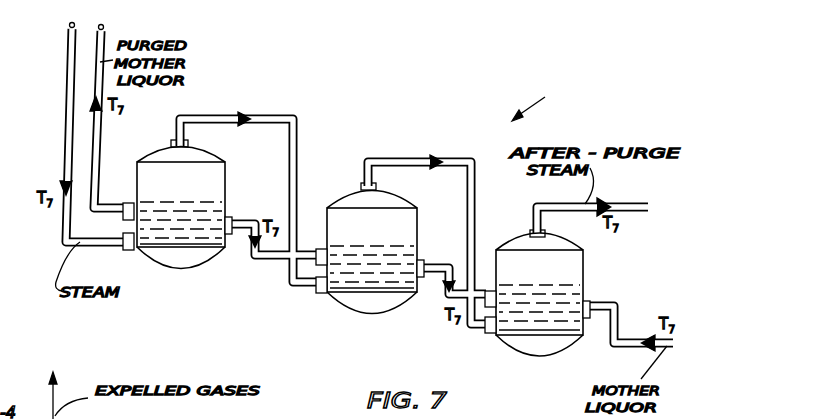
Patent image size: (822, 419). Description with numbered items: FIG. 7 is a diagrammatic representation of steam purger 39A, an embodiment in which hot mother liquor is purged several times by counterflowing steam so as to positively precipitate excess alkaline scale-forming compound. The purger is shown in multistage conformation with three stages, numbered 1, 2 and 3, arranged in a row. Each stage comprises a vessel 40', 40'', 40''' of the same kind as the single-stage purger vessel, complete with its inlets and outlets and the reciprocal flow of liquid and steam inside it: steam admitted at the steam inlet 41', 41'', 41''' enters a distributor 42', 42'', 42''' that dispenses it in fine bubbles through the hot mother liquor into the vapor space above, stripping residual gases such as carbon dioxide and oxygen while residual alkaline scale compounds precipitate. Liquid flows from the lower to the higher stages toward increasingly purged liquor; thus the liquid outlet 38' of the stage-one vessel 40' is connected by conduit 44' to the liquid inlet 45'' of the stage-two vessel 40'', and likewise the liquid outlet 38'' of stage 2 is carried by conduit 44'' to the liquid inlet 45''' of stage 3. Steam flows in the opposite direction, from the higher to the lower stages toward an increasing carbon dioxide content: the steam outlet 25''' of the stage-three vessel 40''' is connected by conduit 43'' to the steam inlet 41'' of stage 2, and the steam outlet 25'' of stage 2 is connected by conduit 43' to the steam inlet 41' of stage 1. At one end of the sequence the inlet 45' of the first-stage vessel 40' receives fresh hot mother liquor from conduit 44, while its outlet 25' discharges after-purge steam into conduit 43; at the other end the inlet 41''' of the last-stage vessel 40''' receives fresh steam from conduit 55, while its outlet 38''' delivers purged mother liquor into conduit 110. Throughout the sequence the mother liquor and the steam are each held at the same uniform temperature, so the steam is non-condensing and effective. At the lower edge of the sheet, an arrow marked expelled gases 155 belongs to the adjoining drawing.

The conduit 55 is at (65, 146).
The conduit 110 is at (99, 133).
The stage 3 is at (176, 221).
The stage 2 is at (355, 258).
The stage 1 is at (544, 307).
The stage 3 vessel 40''' is at (162, 197).
The stage 2 vessel 40'' is at (360, 236).
The stage 1 vessel 40' is at (567, 284).
The steam outlet 25''' is at (208, 122).
The vapor outlet line (second stage) 25'' is at (399, 164).
The outlet 25' is at (567, 209).
The steam transfer line to second stage 43'' is at (278, 186).
The steam transfer line to first stage 43' is at (458, 228).
The conduit 43 is at (622, 196).
The liquor transfer line from third stage 44'' is at (274, 256).
The conduit 44' is at (454, 264).
The conduit 44 is at (630, 340).
The outlet 38''' is at (108, 220).
The liquor inlet connection (second stage) 38'' is at (312, 243).
The liquid outlet 38' is at (489, 270).
The inlet 41''' is at (113, 257).
The steam inlet 41'' is at (292, 300).
The steam inlet connection (first stage) 41' is at (473, 339).
The vessel bottom (third stage) 42''' is at (191, 270).
The vessel bottom (second stage) 42'' is at (380, 314).
The vessel bottom (first stage) 42' is at (544, 358).
The liquor outlet connection (third stage) 45''' is at (234, 246).
The liquid inlet 45'' is at (427, 287).
The inlet 45' is at (592, 330).
The steam purger 39A is at (328, 76).
The expelled gases line 155 is at (92, 417).